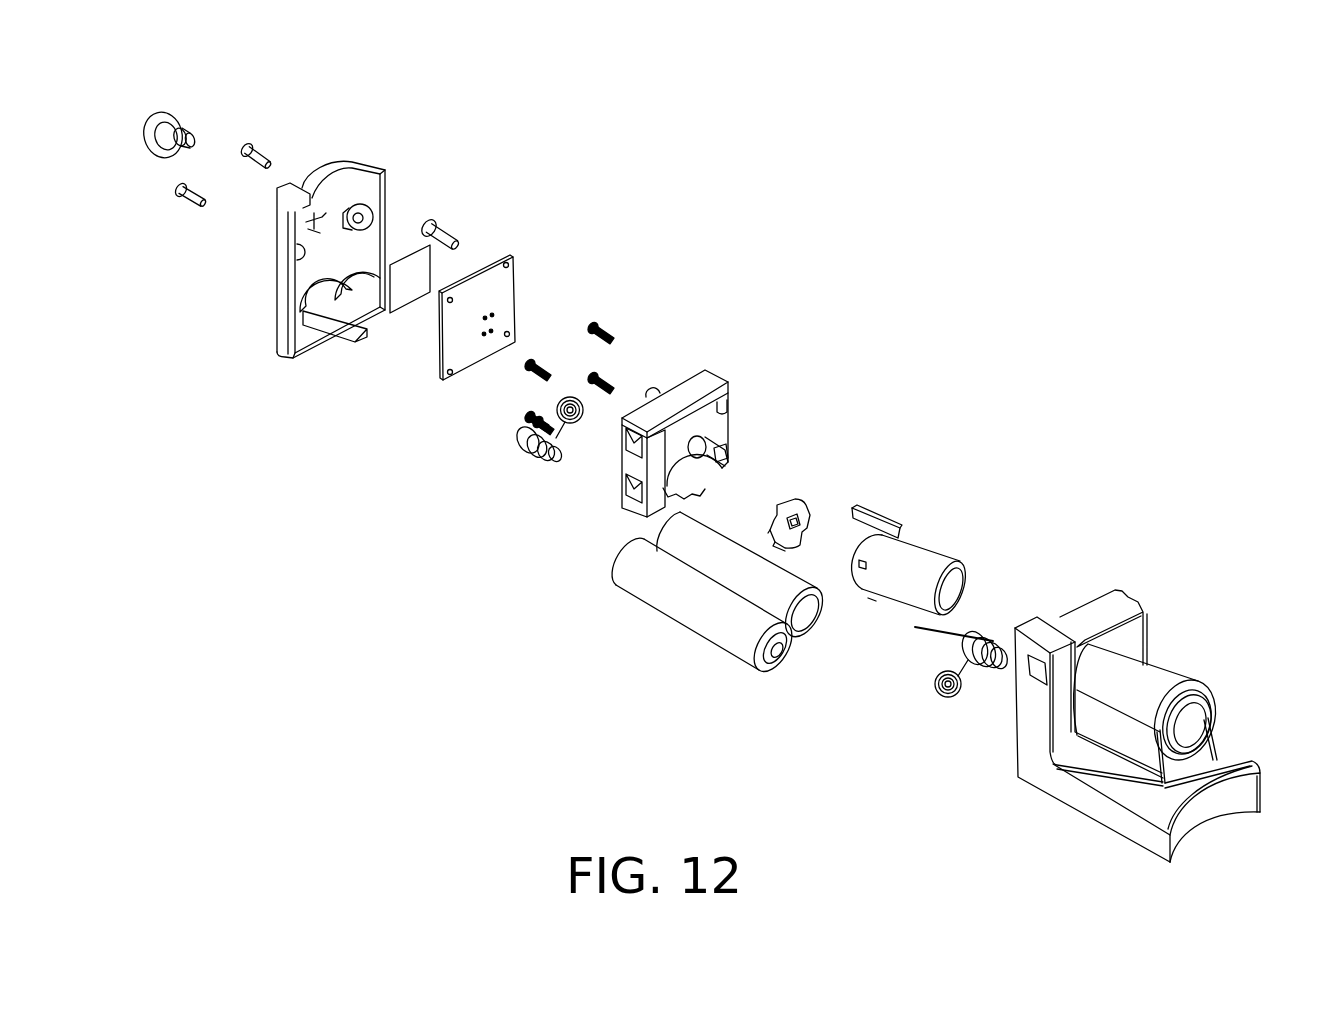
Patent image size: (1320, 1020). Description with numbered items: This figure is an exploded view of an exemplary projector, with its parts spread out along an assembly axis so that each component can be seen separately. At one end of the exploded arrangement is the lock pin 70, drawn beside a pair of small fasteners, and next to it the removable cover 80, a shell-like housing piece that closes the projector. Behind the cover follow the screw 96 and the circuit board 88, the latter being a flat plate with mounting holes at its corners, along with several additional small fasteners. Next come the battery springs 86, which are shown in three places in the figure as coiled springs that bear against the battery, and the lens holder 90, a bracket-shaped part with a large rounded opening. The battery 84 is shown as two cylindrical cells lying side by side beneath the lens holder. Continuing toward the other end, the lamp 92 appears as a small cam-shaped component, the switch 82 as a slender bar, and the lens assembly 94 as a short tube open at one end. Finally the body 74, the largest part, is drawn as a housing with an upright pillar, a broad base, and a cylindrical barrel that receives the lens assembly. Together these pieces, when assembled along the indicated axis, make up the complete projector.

The lock pin 70 is at (176, 108).
The body 74 is at (1166, 650).
The removable cover 80 is at (378, 165).
The switch 82 is at (877, 499).
The battery 84 is at (619, 621).
The battery springs 86 is at (509, 469).
The circuit board 88 is at (524, 248).
The lens holder 90 is at (731, 366).
The lamp 92 is at (811, 496).
The lens assembly 94 is at (963, 540).
The screw 96 is at (461, 224).